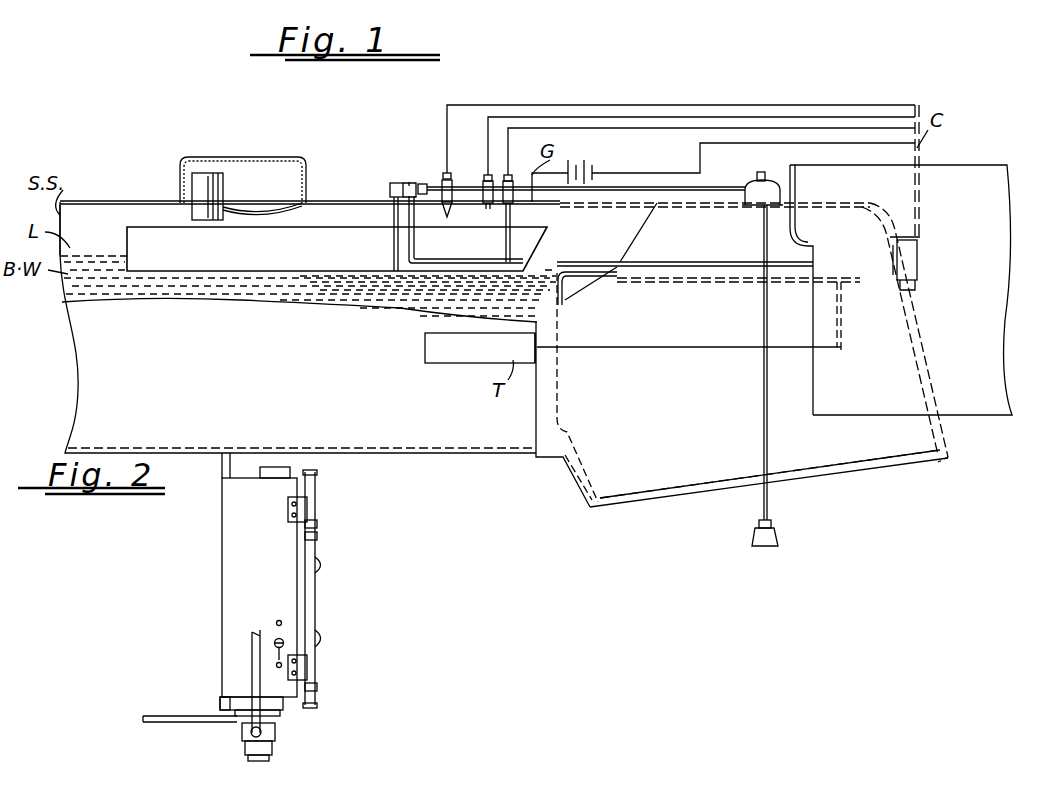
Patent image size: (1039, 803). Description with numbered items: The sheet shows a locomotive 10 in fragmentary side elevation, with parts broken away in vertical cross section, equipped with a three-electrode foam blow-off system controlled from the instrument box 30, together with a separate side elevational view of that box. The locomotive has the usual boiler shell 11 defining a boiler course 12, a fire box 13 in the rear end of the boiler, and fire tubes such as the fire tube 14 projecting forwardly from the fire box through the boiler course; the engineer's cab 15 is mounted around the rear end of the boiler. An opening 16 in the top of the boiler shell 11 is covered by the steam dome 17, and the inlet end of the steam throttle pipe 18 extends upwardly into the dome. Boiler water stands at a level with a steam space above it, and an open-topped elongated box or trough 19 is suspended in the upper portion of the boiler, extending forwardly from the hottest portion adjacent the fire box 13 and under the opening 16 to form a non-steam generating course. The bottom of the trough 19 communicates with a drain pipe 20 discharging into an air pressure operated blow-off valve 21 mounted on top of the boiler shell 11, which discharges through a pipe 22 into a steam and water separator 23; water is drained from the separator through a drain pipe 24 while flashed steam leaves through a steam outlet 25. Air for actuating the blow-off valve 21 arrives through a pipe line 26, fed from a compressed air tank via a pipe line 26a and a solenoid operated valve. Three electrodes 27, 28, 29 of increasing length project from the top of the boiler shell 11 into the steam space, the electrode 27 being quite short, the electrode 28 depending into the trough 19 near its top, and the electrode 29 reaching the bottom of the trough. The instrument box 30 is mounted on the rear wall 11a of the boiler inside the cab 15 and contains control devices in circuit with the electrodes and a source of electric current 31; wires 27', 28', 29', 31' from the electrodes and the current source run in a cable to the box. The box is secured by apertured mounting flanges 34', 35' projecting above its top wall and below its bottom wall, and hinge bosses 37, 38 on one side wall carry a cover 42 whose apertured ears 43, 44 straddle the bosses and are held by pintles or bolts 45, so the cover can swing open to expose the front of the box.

In FIG. 1, the locomotive 10 is at (99, 191).
In FIG. 1, the boiler shell 11 is at (122, 200).
In FIG. 1, the rear wall of the boiler 11a is at (918, 360).
In FIG. 1, the boiler course 12 is at (140, 214).
In FIG. 1, the fire box 13 is at (560, 396).
In FIG. 1, the fire tube 14 is at (348, 300).
In FIG. 1, the engineer's cab 15 is at (948, 172).
In FIG. 1, the opening 16 is at (258, 205).
In FIG. 1, the steam dome 17 is at (266, 160).
In FIG. 1, the steam throttle pipe 18 is at (224, 200).
In FIG. 1, the box or trough 19 is at (337, 249).
In FIG. 1, the drain pipe 20 is at (392, 247).
In FIG. 1, the blow-off valve 21 is at (394, 182).
In FIG. 1, the pipe 22 is at (423, 183).
In FIG. 1, the steam and water separator 23 is at (752, 208).
In FIG. 1, the drain pipe 24 is at (762, 298).
In FIG. 1, the steam outlet 25 is at (761, 172).
In FIG. 1, the pipe line 26 is at (466, 229).
In FIG. 1, the pipe line 26a is at (645, 346).
In FIG. 1, the electrode 27 is at (463, 187).
In FIG. 1, the wire 27' is at (681, 125).
In FIG. 1, the electrode 28 is at (490, 217).
In FIG. 1, the wire 28' is at (701, 126).
In FIG. 1, the electrode 29 is at (532, 218).
In FIG. 1, the wire 29' is at (711, 128).
In FIG. 1, the instrument box 30 is at (917, 258).
In FIG. 2, the instrument box 30 is at (234, 569).
In FIG. 1, the source of electric current 31 is at (588, 170).
In FIG. 1, the wire 31' is at (753, 128).
In FIG. 2, the mounting flange 34' is at (202, 491).
In FIG. 2, the mounting flange 35' is at (190, 700).
In FIG. 2, the hinge boss 37 is at (308, 665).
In FIG. 2, the hinge boss 38 is at (308, 507).
In FIG. 2, the cover 42 is at (316, 595).
In FIG. 2, the apertured ears 43 is at (318, 689).
In FIG. 2, the apertured ears 44 is at (318, 524).
In FIG. 2, the pintles or bolts 45 is at (318, 538).